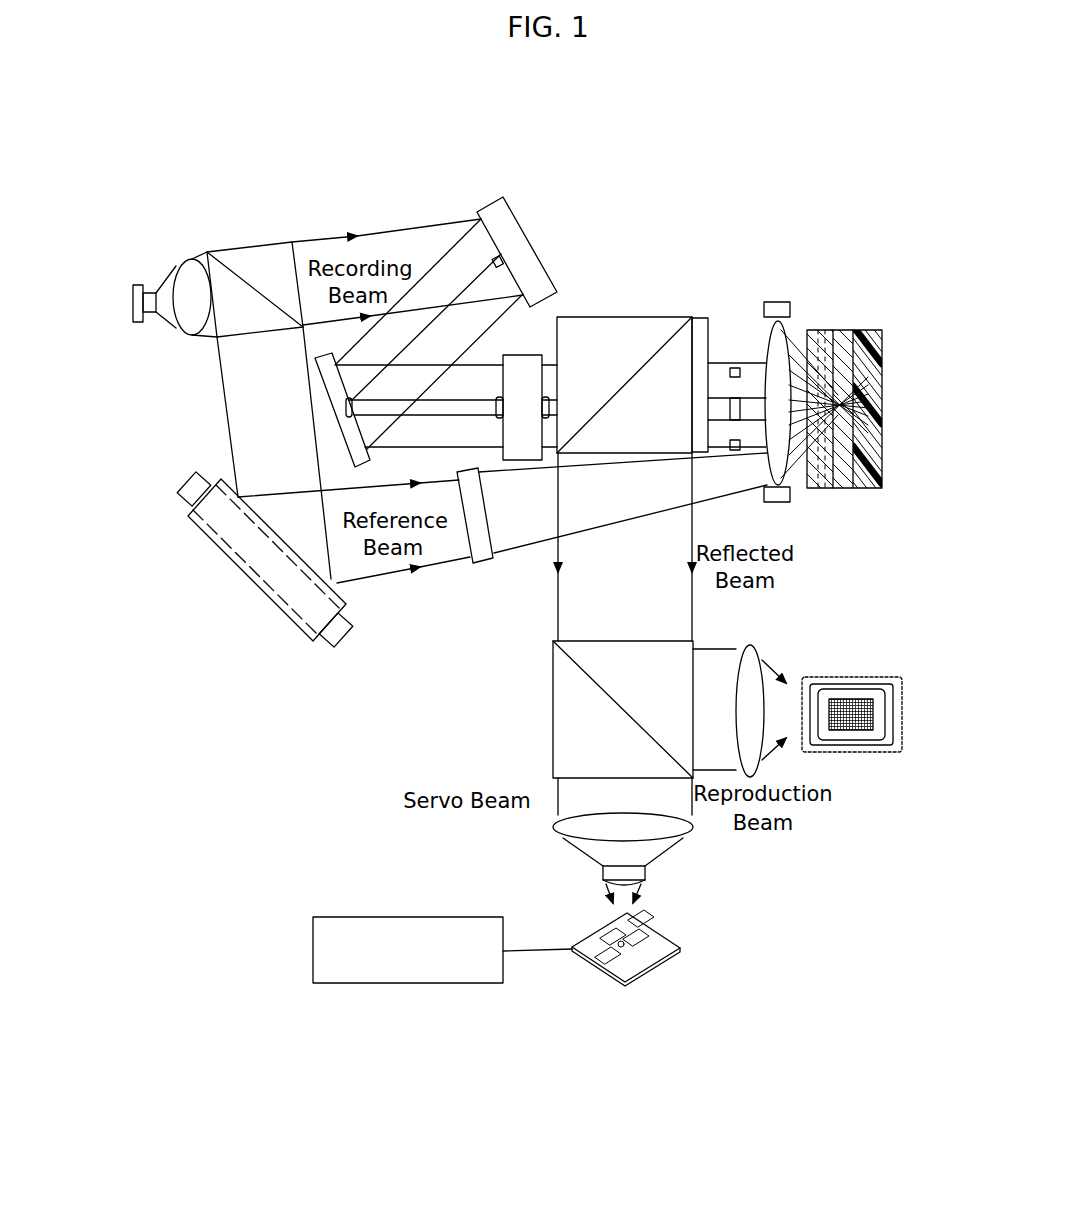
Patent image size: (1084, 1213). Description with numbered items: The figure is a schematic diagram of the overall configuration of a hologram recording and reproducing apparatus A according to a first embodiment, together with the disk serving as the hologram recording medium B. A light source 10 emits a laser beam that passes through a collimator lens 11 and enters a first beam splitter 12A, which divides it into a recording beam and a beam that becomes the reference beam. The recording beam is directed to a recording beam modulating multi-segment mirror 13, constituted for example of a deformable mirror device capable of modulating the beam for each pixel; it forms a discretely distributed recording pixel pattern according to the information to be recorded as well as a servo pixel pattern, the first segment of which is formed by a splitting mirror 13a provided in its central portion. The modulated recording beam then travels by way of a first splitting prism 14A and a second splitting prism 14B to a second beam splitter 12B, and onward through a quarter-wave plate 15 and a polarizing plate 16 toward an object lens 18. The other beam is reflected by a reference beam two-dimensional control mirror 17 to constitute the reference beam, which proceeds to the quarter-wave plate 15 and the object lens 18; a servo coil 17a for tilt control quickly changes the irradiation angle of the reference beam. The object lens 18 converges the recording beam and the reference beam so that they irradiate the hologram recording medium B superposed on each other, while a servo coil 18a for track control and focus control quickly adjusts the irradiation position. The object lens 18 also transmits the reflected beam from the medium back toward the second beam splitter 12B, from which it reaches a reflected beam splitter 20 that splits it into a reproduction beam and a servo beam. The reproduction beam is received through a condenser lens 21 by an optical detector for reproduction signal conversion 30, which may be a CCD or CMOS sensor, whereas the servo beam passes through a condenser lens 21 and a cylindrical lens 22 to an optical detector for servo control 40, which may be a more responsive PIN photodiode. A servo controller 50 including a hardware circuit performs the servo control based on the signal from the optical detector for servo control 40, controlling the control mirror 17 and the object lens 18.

The light source 10 is at (137, 282).
The collimator lens 11 is at (186, 262).
The first beam splitter 12A is at (249, 247).
The second beam splitter 12B is at (633, 317).
The recording beam modulating multi-segment mirror 13 is at (523, 221).
The splitting mirror 13a is at (505, 262).
The first splitting prism 14A is at (343, 433).
The second splitting prism 14B is at (528, 355).
The λ/4 plate 15 is at (702, 317).
The polarizing plate 16 is at (735, 368).
The reference beam two-dimensional control mirror 17 is at (277, 613).
The servo coil 17a is at (183, 487).
The object lens 18 is at (783, 345).
The servo coil 18a is at (780, 302).
The reflected beam splitter 20 is at (553, 718).
The condenser lens 21 is at (752, 640).
The cylindrical lens 22 is at (647, 868).
The optical detector for reproduction signal conversion 30 is at (847, 752).
The optical detector for servo control 40 is at (625, 985).
The servo controller 50 is at (405, 983).
The hologram recording and reproducing apparatus A is at (548, 214).
The hologram recording medium B is at (855, 503).